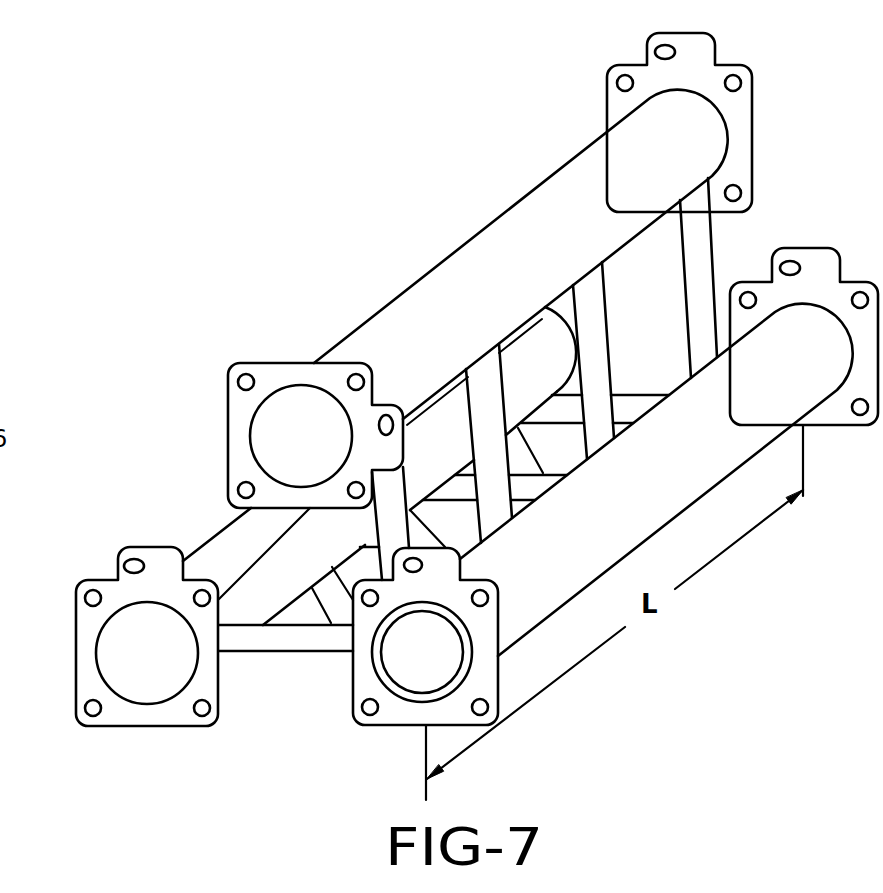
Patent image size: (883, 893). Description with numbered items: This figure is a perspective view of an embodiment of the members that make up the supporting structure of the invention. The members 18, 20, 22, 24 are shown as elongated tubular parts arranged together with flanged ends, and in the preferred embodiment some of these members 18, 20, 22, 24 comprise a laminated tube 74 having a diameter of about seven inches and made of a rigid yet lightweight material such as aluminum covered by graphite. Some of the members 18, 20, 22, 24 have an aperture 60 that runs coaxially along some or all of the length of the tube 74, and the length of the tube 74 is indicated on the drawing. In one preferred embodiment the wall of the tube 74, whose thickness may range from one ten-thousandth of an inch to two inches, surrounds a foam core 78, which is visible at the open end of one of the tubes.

The member 18 is at (439, 379).
The member 20 is at (439, 379).
The member 22 is at (439, 379).
The member 24 is at (367, 255).
The aperture 60 is at (280, 435).
The laminated tube 74 is at (447, 270).
The foam core 78 is at (415, 656).